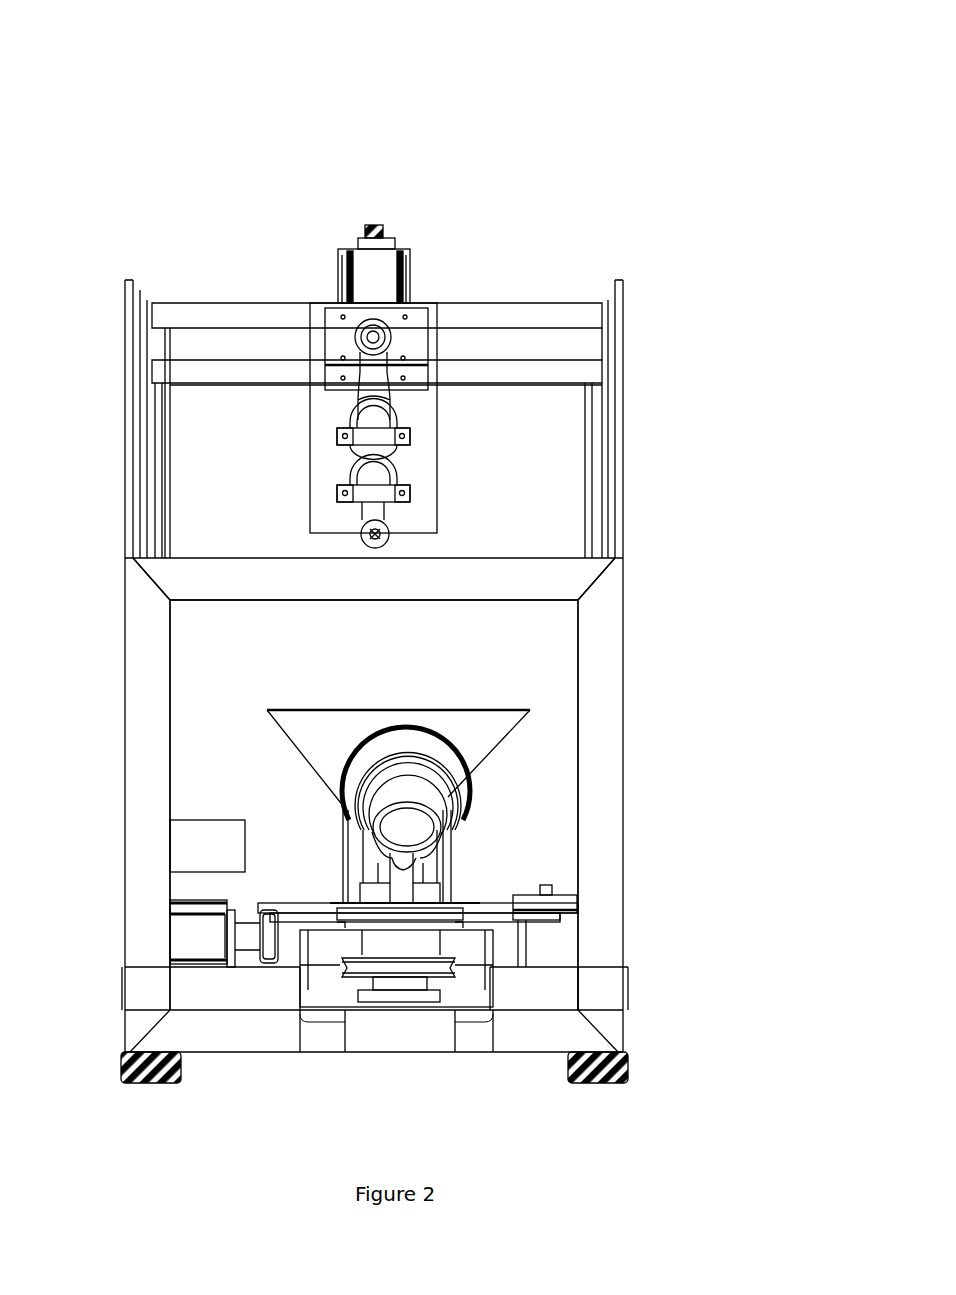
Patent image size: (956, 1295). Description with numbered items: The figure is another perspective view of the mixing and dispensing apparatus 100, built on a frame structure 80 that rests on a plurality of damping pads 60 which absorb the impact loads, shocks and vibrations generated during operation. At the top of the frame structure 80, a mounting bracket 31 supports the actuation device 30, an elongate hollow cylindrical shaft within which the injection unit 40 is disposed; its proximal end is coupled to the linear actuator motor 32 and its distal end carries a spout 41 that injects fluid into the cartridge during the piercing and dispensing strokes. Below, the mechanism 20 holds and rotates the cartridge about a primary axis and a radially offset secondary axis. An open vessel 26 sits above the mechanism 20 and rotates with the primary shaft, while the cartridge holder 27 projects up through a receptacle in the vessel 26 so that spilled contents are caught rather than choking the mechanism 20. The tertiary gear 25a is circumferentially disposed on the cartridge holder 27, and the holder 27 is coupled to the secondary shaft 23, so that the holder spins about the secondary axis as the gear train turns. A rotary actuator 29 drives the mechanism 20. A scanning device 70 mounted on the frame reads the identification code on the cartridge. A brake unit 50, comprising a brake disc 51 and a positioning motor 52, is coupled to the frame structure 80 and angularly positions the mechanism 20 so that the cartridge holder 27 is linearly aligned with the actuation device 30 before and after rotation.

The mixing and dispensing apparatus 100 is at (555, 157).
The linear actuator motor 32 is at (398, 240).
The mounting bracket 31 is at (238, 297).
The actuation device 30 is at (394, 432).
The injection unit 40 is at (390, 507).
The spout 41 is at (387, 536).
The frame structure 80 is at (632, 623).
The open vessel 26 is at (537, 714).
The mechanism 20 is at (497, 767).
The tertiary gear 25a is at (478, 784).
The cartridge holder 27 is at (427, 792).
The rotary actuator 29 is at (341, 815).
The scanning device 70 is at (194, 813).
The positioning motor 52 is at (195, 896).
The brake disc 51 is at (500, 913).
The brake unit 50 is at (460, 928).
The secondary shaft 23 is at (398, 1000).
The damping pads 60 is at (166, 1088).